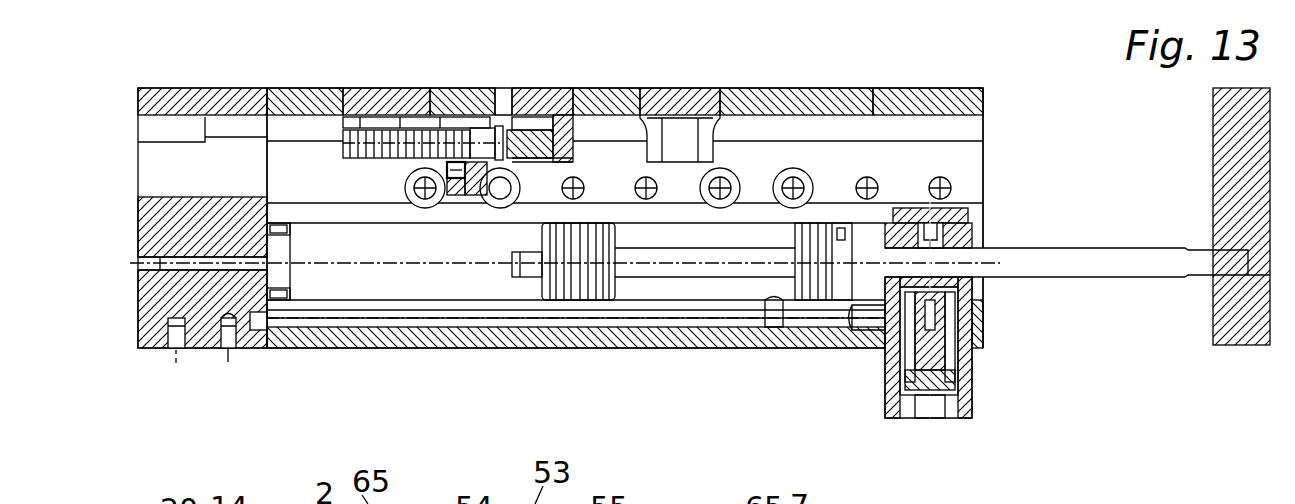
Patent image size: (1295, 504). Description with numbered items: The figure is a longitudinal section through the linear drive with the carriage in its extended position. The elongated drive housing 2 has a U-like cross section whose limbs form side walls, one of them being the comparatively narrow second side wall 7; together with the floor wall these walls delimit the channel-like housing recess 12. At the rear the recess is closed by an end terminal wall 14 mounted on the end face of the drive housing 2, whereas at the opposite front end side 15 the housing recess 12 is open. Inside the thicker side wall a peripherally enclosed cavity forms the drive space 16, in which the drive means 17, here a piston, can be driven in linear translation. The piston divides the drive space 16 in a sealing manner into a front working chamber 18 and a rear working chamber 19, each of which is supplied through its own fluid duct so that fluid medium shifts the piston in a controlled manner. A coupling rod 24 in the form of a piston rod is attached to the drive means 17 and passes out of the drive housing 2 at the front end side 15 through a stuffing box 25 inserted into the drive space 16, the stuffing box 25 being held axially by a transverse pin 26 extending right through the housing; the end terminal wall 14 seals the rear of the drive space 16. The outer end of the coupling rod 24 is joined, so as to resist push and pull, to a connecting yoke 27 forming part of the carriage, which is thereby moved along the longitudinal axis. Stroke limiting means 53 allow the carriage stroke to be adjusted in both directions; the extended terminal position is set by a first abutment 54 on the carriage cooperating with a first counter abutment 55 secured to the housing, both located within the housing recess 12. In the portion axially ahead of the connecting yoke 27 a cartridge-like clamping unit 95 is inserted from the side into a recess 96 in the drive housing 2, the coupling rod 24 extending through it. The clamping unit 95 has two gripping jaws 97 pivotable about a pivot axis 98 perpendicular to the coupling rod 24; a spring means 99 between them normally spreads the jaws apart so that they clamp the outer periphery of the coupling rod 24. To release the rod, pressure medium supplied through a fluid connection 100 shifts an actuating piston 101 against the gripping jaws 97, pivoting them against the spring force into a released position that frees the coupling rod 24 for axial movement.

The drive housing 2 is at (325, 347).
The second side wall 7 is at (787, 95).
The housing recess 12 is at (872, 140).
The end terminal wall 14 is at (150, 350).
The front end side 15 is at (993, 152).
The drive space 16 is at (430, 294).
The drive means 17 is at (580, 295).
The front working chamber 18 is at (668, 300).
The rear working chamber 19 is at (356, 290).
The coupling rod 24 is at (1152, 270).
The stuffing box 25 is at (825, 300).
The transverse pin 26 is at (840, 228).
The connecting yoke 27 is at (1245, 332).
The stroke limiting means 53 is at (500, 103).
The first abutment 54 is at (438, 118).
The first counter abutment 55 is at (558, 130).
The clamping unit 95 is at (983, 367).
The recess 96 is at (893, 365).
The gripping jaws 97 is at (940, 205).
The pivot axis 98 is at (997, 242).
The spring means 99 is at (983, 317).
The fluid connection 100 is at (935, 420).
The actuating piston 101 is at (975, 400).